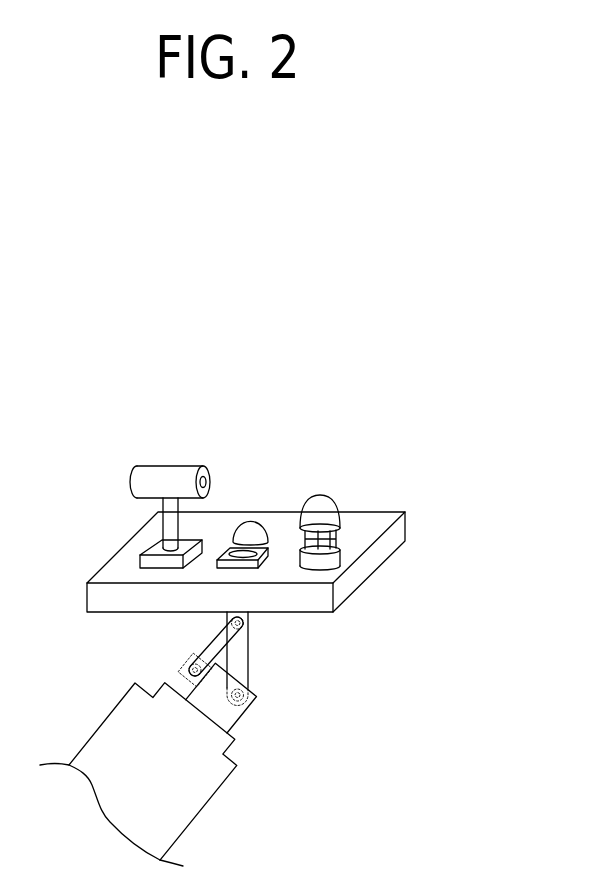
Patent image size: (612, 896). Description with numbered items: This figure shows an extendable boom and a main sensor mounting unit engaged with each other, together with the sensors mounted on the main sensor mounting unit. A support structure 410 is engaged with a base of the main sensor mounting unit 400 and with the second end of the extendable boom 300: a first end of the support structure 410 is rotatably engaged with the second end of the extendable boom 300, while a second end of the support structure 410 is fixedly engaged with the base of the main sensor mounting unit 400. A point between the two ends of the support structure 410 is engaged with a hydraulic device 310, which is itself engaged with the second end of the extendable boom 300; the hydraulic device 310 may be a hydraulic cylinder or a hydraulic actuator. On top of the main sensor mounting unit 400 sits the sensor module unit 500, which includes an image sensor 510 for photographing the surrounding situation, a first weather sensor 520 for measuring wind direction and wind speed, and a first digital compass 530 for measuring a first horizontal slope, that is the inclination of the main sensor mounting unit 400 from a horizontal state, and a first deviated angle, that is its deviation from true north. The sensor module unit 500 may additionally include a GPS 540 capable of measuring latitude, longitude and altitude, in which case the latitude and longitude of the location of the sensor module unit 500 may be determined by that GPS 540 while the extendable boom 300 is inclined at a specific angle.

The extendable boom 300 is at (205, 787).
The hydraulic device 310 is at (213, 652).
The main sensor mounting unit 400 is at (365, 568).
The support structure 410 is at (238, 655).
The sensor module unit 500 is at (387, 366).
The image sensor 510 is at (163, 467).
The first weather sensor 520 is at (322, 507).
The first digital compass 530 is at (243, 551).
The GPS 540 is at (252, 525).